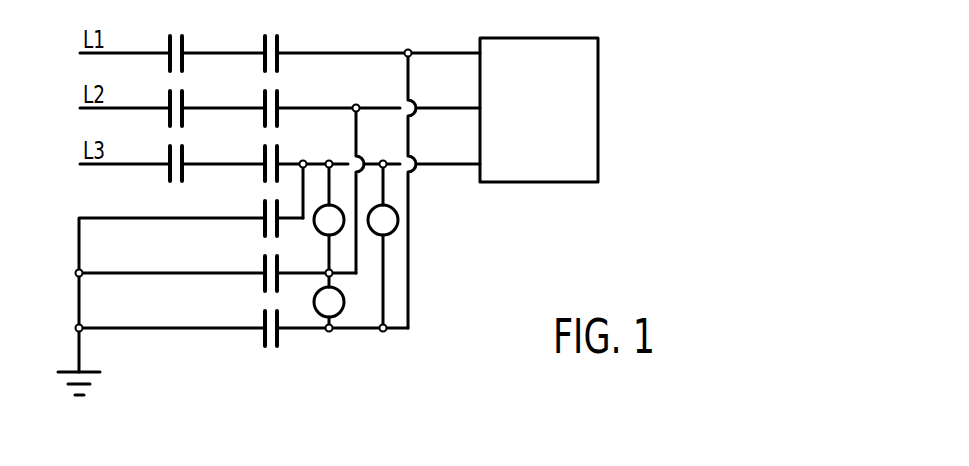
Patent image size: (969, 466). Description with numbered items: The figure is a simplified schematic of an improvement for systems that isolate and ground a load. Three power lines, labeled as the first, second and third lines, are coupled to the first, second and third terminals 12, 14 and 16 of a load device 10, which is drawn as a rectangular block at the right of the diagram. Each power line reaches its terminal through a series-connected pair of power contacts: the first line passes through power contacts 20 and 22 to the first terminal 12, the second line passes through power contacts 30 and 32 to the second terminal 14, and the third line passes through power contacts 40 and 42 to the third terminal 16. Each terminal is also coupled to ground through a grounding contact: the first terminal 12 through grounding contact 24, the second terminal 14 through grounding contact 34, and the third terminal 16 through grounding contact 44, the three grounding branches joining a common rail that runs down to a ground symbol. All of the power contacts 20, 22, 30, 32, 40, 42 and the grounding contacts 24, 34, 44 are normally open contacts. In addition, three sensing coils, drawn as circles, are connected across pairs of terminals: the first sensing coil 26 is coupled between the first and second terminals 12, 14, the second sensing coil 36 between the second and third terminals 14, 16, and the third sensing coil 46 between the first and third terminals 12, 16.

The load device 10 is at (554, 122).
The first terminal 12 is at (462, 39).
The second terminal 14 is at (462, 92).
The third terminal 16 is at (462, 150).
The power contact 20 is at (199, 30).
The power contact 22 is at (288, 30).
The grounding contact 24 is at (245, 201).
The first sensing coil 26 is at (317, 311).
The power contact 30 is at (199, 85).
The power contact 32 is at (288, 85).
The grounding contact 34 is at (245, 256).
The second sensing coil 36 is at (316, 228).
The power contact 40 is at (199, 140).
The power contact 42 is at (288, 140).
The grounding contact 44 is at (245, 311).
The third sensing coil 46 is at (398, 220).